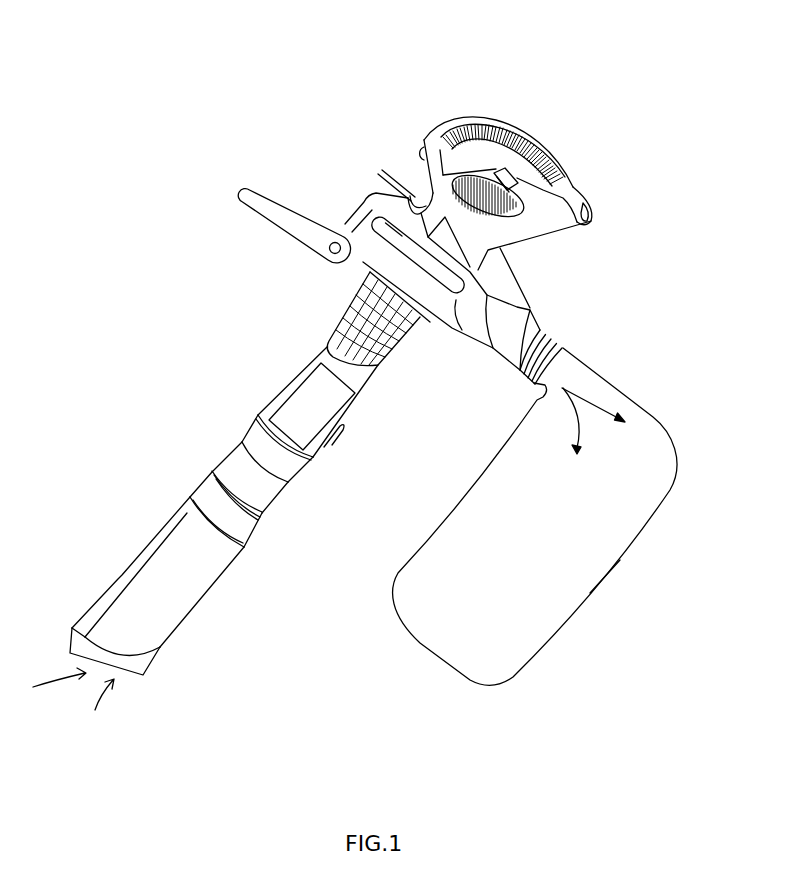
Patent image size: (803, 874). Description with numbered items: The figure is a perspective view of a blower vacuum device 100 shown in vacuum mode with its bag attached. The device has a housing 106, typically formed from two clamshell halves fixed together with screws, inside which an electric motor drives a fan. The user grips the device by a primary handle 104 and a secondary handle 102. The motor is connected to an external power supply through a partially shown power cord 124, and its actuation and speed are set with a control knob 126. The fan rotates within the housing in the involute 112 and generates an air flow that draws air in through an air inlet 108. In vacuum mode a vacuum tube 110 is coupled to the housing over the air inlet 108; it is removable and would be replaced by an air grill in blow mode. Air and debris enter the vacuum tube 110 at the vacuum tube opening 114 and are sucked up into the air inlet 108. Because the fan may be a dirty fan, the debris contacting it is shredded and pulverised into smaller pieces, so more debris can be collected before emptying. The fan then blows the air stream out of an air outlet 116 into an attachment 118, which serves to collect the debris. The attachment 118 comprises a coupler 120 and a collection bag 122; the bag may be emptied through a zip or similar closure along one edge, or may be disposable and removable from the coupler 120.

The blower vacuum device 100 is at (166, 189).
The secondary handle 102 is at (243, 191).
The primary handle 104 is at (487, 119).
The housing 106 is at (563, 231).
The air inlet 108 is at (363, 262).
The vacuum tube 110 is at (177, 512).
The involute 112 is at (378, 222).
The vacuum tube opening 114 is at (70, 647).
The air outlet 116 is at (520, 320).
The attachment 118 is at (631, 397).
The coupler 120 is at (543, 338).
The collection bag 122 is at (577, 617).
The power cord 124 is at (381, 170).
The control knob 126 is at (507, 176).